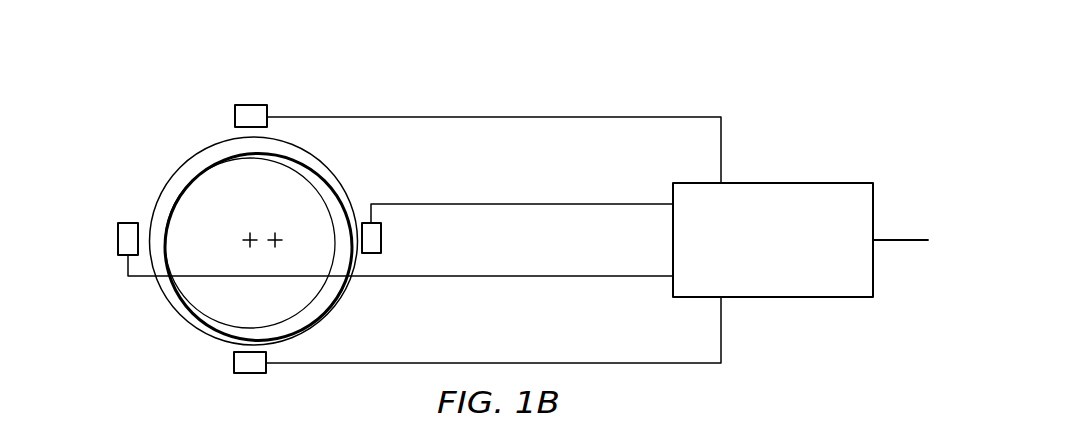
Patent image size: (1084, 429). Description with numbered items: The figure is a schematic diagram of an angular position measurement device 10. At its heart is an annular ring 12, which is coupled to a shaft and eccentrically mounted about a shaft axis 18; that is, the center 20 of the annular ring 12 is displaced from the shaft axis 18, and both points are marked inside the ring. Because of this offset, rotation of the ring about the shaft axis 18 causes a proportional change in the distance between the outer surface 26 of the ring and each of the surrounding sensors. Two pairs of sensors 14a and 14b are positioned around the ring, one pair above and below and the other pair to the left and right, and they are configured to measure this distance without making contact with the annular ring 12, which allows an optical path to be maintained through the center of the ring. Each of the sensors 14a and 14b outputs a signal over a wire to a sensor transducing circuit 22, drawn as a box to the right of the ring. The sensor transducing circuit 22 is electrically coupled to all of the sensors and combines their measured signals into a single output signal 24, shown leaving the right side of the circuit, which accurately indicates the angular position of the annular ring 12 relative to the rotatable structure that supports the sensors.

The angular position measurement device 10 is at (578, 90).
The annular ring 12 is at (317, 170).
The sensors 14a is at (248, 105).
The sensors 14b is at (127, 223).
The shaft axis 18 is at (282, 235).
The center 20 is at (245, 235).
The sensor transducing circuit 22 is at (807, 183).
The output signal 24 is at (900, 240).
The outer surface 26 is at (197, 150).